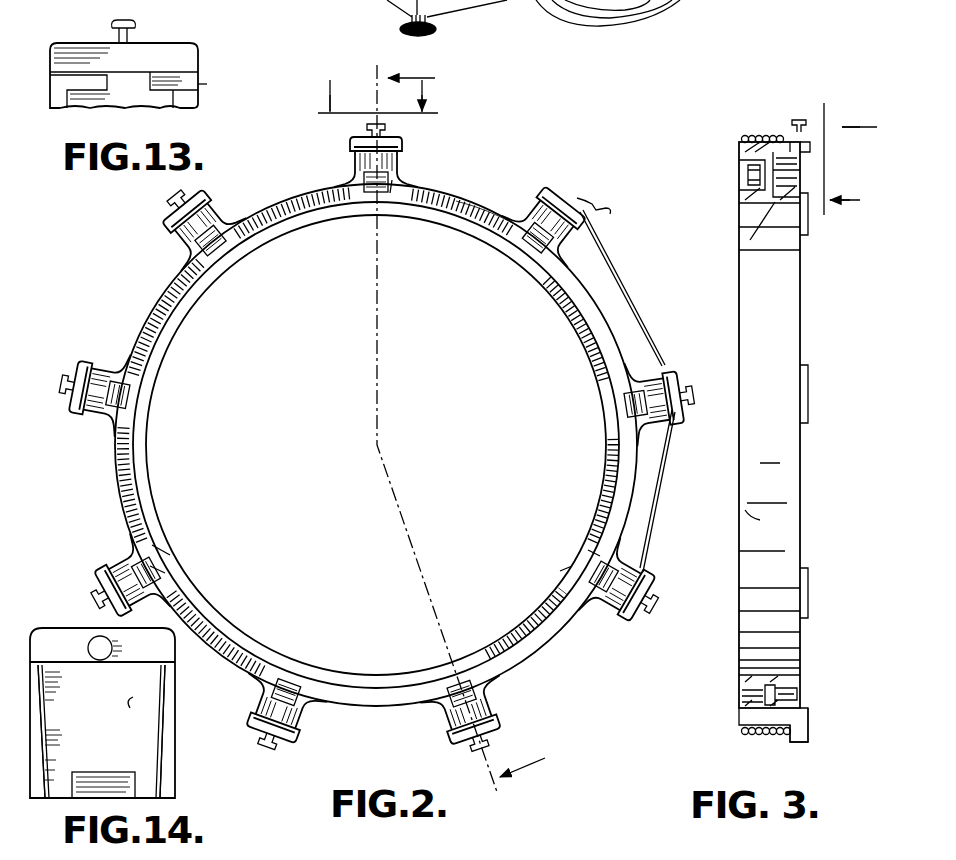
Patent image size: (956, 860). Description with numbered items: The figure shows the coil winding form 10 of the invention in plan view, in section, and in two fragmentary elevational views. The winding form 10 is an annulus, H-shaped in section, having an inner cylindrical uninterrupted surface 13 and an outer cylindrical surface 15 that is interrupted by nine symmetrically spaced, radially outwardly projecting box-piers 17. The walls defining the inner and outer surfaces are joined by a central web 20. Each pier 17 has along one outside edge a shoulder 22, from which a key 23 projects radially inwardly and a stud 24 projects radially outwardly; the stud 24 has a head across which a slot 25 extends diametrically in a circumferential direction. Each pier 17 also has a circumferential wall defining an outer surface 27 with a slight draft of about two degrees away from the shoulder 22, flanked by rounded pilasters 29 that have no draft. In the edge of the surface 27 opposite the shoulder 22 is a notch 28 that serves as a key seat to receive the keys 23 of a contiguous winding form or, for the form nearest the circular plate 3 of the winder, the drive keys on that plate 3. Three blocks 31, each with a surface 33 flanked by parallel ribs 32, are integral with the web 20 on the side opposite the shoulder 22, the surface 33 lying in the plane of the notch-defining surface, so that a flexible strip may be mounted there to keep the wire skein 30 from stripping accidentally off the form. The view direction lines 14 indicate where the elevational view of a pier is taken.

In FIG. 2, the winding form 10 is at (296, 183).
In FIG. 3, the winding form 10 is at (724, 216).
In FIG. 2, the inner cylindrical uninterrupted surface 13 is at (168, 352).
In FIG. 3, the inner cylindrical uninterrupted surface 13 is at (722, 266).
In FIG. 2, the view direction line 14— 14 is at (377, 117).
In FIG. 2, the outer cylindrical surface 15 is at (492, 190).
In FIG. 14, the box-pier 17 is at (185, 699).
In FIG. 2, the box-pier 17 is at (190, 240).
In FIG. 2, the central web 20 is at (178, 305).
In FIG. 3, the central web 20 is at (790, 175).
In FIG. 13, the shoulder 22 is at (160, 42).
In FIG. 14, the shoulder 22 is at (90, 628).
In FIG. 2, the shoulder 22 is at (182, 197).
In FIG. 3, the shoulder 22 is at (795, 150).
In FIG. 13, the key 23 is at (216, 85).
In FIG. 13, the stud 24 is at (112, 24).
In FIG. 3, the slot 25 is at (800, 120).
In FIG. 14, the outer surface 27 is at (130, 708).
In FIG. 14, the notch 28 is at (135, 782).
In FIG. 2, the notch 28 is at (572, 195).
In FIG. 14, the pilaster 29 is at (45, 770).
In FIG. 3, the wire skein 30 is at (778, 135).
In FIG. 2, the block 31 is at (370, 195).
In FIG. 3, the block 31 is at (745, 163).
In FIG. 2, the rib 32 is at (158, 548).
In FIG. 3, the rib 32 is at (740, 186).
In FIG. 2, the surface 33 is at (386, 195).
In FIG. 2, the circular plate 3 is at (473, 428).